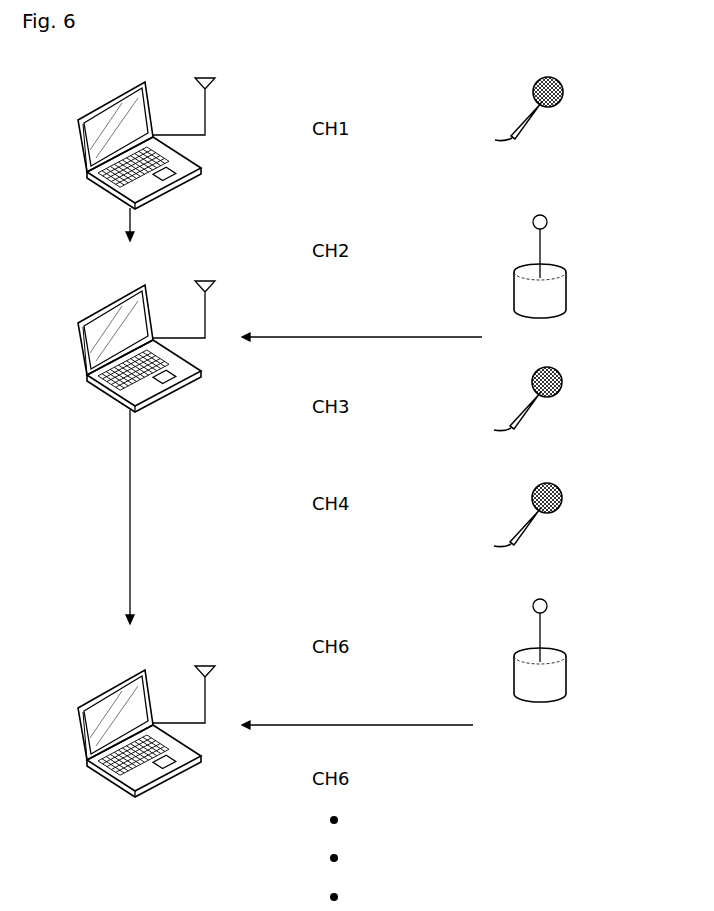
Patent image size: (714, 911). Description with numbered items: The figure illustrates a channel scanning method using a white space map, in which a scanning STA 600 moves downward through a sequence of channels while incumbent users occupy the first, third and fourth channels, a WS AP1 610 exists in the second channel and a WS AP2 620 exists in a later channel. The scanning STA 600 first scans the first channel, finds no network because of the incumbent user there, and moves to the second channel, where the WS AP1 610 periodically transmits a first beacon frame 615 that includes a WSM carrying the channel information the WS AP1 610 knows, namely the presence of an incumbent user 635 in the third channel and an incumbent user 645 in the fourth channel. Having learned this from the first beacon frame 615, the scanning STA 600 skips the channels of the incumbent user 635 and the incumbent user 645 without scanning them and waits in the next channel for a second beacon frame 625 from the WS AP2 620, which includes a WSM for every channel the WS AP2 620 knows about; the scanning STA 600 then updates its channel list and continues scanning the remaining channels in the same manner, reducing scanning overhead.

The scanning STA 600 is at (127, 421).
The first beacon frame 615 is at (442, 204).
The WS AP1 610 is at (547, 281).
The incumbent user 635 is at (531, 415).
The incumbent user 645 is at (531, 531).
The WS AP2 620 is at (547, 666).
The second beacon frame 625 is at (357, 701).